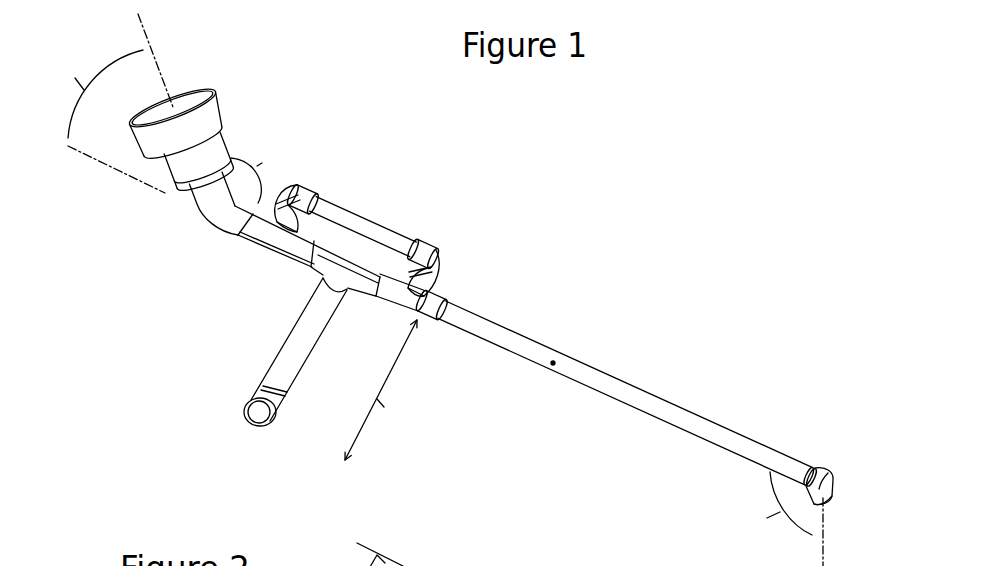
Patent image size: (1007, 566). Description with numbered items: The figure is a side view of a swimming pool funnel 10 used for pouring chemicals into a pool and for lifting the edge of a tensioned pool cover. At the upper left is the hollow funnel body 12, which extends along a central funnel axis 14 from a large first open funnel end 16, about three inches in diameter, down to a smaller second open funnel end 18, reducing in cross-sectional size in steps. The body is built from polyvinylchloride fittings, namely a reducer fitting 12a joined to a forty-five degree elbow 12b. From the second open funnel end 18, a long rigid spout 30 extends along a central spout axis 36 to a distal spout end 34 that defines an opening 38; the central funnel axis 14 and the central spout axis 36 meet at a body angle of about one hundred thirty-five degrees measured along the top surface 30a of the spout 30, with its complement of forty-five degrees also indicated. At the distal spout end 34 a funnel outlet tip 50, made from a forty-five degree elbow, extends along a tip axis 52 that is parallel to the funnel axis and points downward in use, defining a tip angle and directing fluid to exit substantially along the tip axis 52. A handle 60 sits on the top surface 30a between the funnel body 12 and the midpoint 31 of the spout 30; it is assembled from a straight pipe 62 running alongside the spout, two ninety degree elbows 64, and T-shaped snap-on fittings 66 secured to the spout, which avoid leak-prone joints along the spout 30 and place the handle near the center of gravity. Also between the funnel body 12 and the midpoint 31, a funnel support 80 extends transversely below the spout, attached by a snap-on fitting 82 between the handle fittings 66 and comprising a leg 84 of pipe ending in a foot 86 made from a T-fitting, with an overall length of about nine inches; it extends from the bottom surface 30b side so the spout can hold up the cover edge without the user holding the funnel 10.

The swimming pool funnel 10 is at (693, 168).
The hollow funnel body 12 is at (226, 147).
The reducer fitting 12a is at (213, 118).
The elbow 12b is at (212, 210).
The central funnel axis 14 is at (145, 30).
The first open funnel end 16 is at (212, 93).
The second open funnel end 18 is at (237, 235).
The spout 30 is at (546, 345).
The top surface of spout 30a is at (634, 378).
The bottom surface of spout 30b is at (627, 412).
The midpoint of spout 31 is at (553, 363).
The distal spout end 34 is at (815, 470).
The central spout axis 36 is at (103, 158).
The opening 38 is at (830, 503).
The funnel outlet tip 50 is at (823, 487).
The tip axis 52 is at (823, 548).
The handle 60 is at (387, 208).
The pipe 62 is at (291, 207).
The elbows 64 is at (313, 202).
The fittings 66 is at (268, 232).
The funnel support 80 is at (291, 333).
The snap-on fitting 82 is at (359, 292).
The leg 84 is at (322, 320).
The foot 86 is at (283, 403).